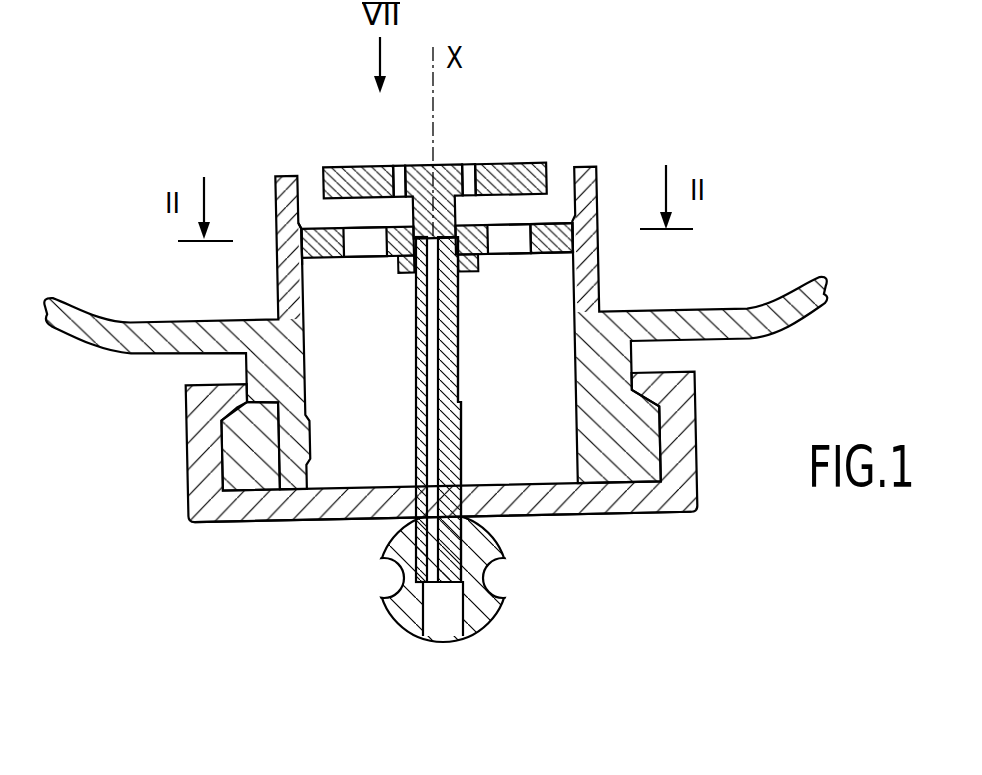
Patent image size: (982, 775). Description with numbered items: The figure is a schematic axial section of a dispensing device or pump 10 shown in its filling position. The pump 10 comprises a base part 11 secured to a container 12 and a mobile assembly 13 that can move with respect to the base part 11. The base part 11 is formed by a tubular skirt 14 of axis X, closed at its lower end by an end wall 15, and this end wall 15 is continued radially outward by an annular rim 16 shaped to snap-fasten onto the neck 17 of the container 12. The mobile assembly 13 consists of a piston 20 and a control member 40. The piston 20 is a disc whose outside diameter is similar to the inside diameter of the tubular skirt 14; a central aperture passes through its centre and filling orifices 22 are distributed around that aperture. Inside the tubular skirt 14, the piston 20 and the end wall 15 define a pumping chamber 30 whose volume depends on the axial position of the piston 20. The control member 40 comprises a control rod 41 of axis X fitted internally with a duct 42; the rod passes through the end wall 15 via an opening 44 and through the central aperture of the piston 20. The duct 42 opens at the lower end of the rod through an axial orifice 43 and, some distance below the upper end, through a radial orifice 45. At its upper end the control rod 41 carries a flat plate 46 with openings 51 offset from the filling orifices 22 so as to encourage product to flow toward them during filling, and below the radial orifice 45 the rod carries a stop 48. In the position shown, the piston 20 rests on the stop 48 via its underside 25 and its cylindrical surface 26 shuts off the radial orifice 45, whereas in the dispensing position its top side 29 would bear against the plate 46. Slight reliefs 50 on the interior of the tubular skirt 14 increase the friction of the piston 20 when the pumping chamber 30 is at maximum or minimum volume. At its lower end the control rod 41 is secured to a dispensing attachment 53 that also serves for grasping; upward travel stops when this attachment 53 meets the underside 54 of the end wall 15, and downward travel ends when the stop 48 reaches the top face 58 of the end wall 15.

The dispensing device or pump 10 is at (216, 143).
The base part 11 is at (613, 166).
The container 12 is at (127, 340).
The mobile assembly 13 is at (327, 157).
The tubular skirt 14 is at (578, 376).
The end wall 15 is at (371, 503).
The annular rim 16 is at (197, 481).
The neck 17 is at (248, 452).
The piston 20 is at (345, 258).
The filling orifices 22 is at (349, 257).
The underside 25 is at (300, 258).
The cylindrical surface 26 is at (466, 212).
The top side 29 is at (322, 229).
The pumping chamber 30 is at (552, 430).
The control member 40 is at (415, 399).
The control rod 41 is at (461, 388).
The duct 42 is at (436, 425).
The axial orifice 43 is at (424, 590).
The opening 44 is at (498, 512).
The radial orifice 45 is at (458, 286).
The flat plate 46 is at (345, 168).
The stop 48 is at (404, 272).
The slight reliefs 50 is at (572, 240).
The openings 51 is at (472, 166).
The dispensing attachment 53 is at (406, 614).
The underside 54 is at (323, 521).
The top face 58 is at (468, 452).